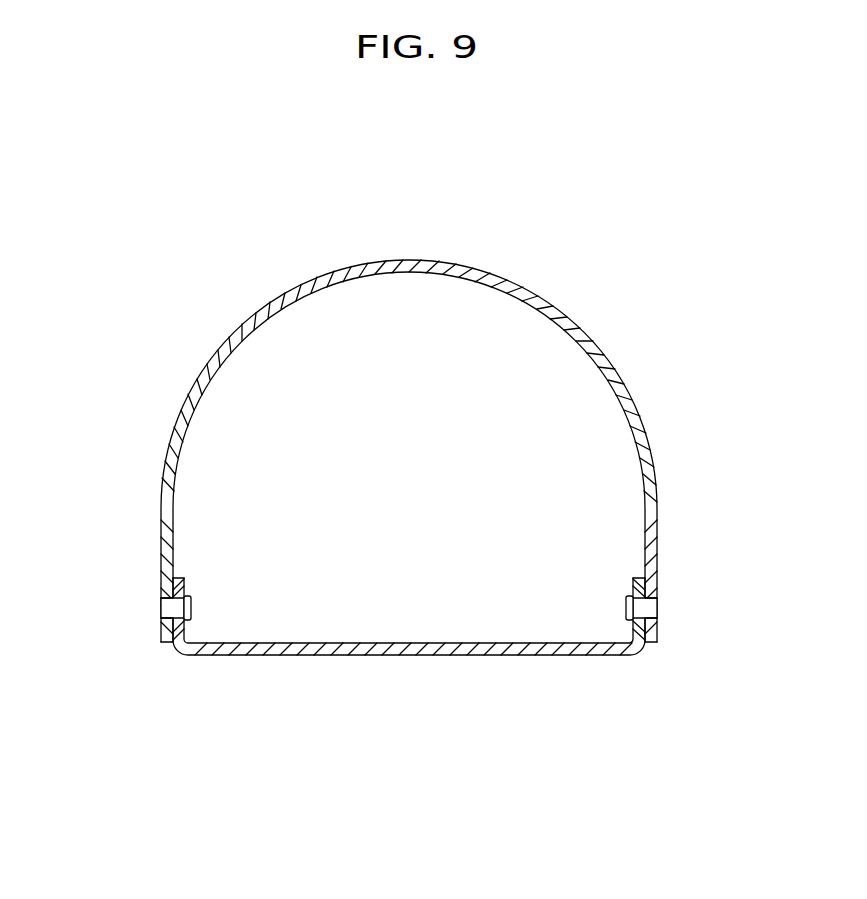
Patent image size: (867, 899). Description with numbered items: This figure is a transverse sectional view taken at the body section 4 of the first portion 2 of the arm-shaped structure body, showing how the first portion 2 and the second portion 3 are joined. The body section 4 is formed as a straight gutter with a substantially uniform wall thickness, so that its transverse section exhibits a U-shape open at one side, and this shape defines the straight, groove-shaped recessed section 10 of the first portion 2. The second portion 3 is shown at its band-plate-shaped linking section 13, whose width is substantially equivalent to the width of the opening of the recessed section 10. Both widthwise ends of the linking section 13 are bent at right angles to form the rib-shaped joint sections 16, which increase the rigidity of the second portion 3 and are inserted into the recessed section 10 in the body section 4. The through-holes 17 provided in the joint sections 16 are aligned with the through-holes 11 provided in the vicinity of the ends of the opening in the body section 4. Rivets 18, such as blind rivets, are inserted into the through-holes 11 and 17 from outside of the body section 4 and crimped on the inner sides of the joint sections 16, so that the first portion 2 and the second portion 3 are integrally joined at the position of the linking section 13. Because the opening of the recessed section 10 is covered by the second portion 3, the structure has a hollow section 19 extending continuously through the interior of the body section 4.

The first portion 2 is at (409, 417).
The second portion 3 is at (409, 648).
The body section 4 is at (249, 310).
The recessed section 10 is at (406, 274).
The through-holes 11 is at (410, 636).
The linking section 13 is at (391, 657).
The joint sections 16 is at (183, 593).
The through-holes 17 is at (191, 609).
The rivets 18 is at (163, 612).
The hollow section 19 is at (417, 630).